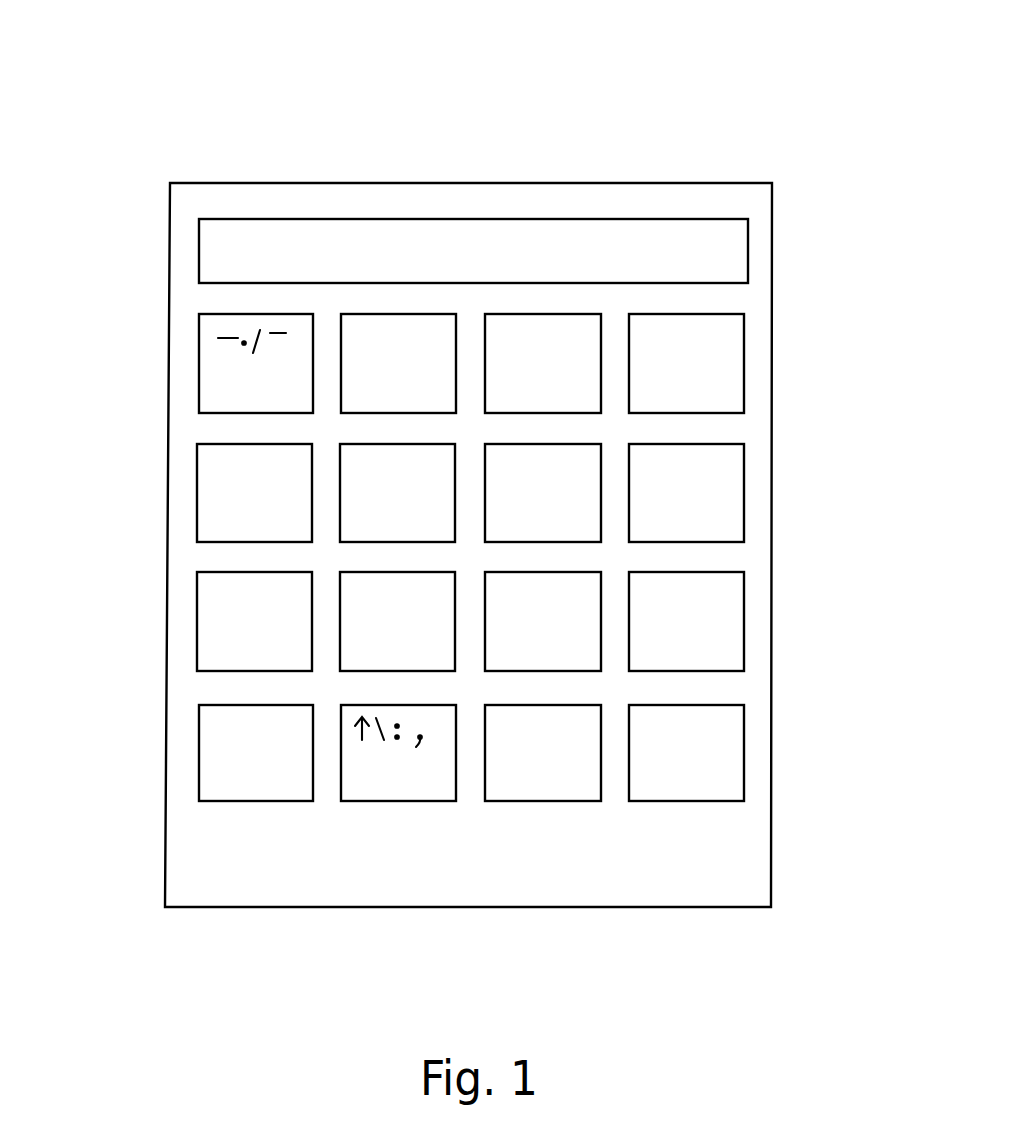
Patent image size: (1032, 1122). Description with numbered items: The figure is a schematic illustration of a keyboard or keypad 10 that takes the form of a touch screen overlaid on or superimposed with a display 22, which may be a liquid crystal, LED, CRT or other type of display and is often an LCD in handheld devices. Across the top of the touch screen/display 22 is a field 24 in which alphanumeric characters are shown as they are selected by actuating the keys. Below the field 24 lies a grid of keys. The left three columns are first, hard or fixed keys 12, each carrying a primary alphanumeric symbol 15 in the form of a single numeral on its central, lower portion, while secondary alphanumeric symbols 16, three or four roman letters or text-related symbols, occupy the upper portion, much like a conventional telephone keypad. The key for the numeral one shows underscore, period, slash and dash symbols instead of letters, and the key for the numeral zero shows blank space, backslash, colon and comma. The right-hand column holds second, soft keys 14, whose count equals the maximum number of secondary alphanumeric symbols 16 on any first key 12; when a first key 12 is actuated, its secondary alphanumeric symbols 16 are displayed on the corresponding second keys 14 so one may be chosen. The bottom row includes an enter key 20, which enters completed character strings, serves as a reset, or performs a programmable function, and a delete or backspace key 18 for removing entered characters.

The keypad 10 is at (783, 133).
The first keys 12 is at (367, 322).
The second keys 14 is at (728, 372).
The primary alphanumeric symbol 15 is at (400, 390).
The secondary alphanumeric symbols 16 is at (422, 333).
The delete key 18 is at (538, 797).
The enter key 20 is at (208, 727).
The display 22 is at (738, 305).
The field 24 is at (250, 237).